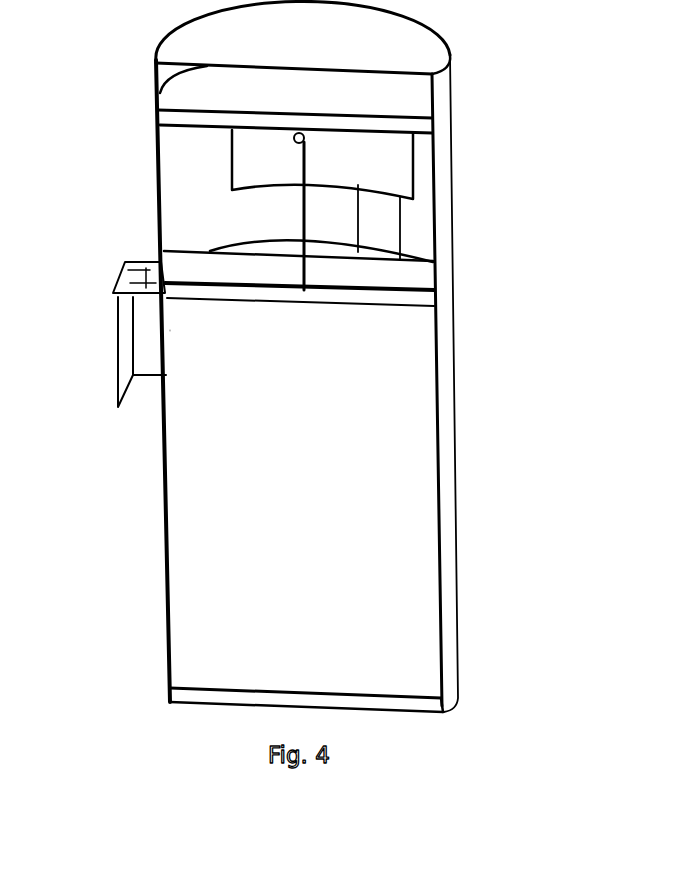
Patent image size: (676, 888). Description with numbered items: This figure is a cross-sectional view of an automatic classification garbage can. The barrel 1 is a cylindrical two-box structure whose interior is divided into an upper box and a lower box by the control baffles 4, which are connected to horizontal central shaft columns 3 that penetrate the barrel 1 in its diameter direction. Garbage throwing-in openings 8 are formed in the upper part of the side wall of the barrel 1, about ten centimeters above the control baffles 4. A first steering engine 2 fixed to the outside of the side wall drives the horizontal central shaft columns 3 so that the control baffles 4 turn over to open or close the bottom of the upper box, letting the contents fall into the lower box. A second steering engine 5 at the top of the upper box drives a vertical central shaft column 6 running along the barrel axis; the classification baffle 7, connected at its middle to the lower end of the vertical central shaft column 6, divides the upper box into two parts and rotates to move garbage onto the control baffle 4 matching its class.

The barrel 1 is at (437, 480).
The first steering engine 2 is at (118, 294).
The horizontal central shaft column 3 is at (364, 298).
The control baffle 4 is at (270, 306).
The second steering engine 5 is at (312, 142).
The vertical central shaft column 6 is at (313, 212).
The classification baffle 7 is at (250, 272).
The garbage throwing-in opening 8 is at (262, 168).